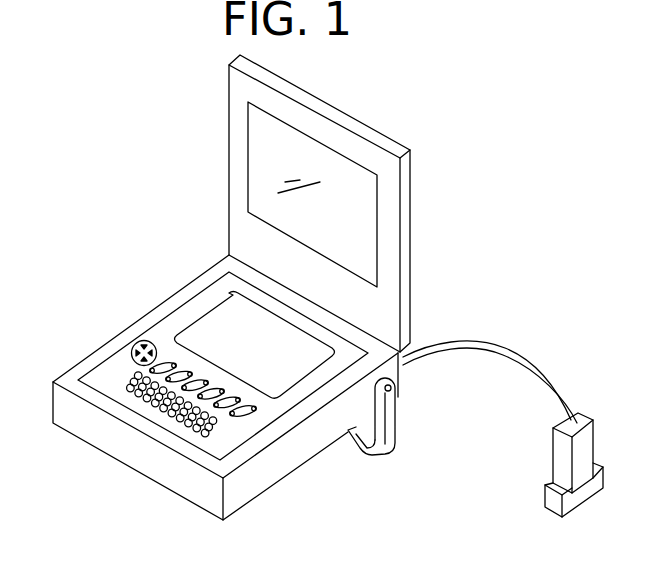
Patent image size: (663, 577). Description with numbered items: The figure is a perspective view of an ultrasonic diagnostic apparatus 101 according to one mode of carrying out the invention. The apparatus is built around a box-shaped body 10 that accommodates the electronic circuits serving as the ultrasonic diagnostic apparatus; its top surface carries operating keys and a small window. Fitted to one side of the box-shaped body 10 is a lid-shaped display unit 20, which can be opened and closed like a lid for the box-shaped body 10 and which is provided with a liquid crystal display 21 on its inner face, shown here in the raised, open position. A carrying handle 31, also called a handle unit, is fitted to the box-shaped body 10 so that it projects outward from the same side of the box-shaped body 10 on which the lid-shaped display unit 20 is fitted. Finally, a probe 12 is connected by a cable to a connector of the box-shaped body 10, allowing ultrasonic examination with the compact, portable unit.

The ultrasonic diagnostic apparatus 101 is at (80, 196).
The box-shaped body 10 is at (110, 432).
The lid-shaped display unit 20 is at (382, 305).
The liquid crystal display 21 is at (272, 150).
The carrying handle 31 is at (397, 422).
The probe 12 is at (583, 455).